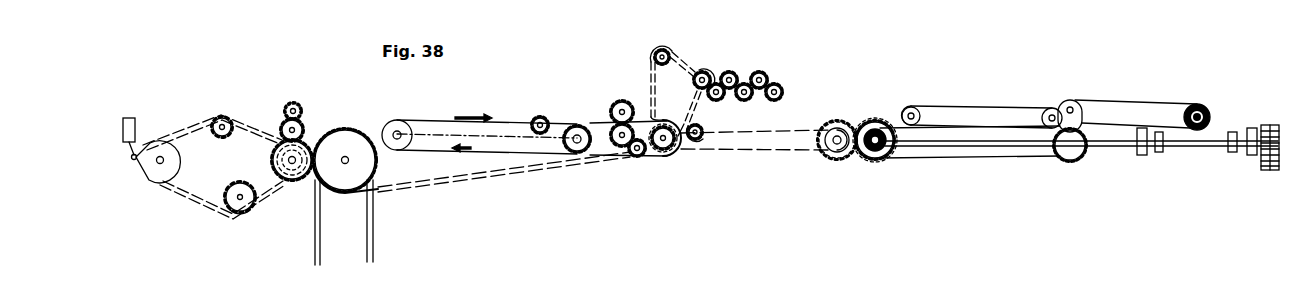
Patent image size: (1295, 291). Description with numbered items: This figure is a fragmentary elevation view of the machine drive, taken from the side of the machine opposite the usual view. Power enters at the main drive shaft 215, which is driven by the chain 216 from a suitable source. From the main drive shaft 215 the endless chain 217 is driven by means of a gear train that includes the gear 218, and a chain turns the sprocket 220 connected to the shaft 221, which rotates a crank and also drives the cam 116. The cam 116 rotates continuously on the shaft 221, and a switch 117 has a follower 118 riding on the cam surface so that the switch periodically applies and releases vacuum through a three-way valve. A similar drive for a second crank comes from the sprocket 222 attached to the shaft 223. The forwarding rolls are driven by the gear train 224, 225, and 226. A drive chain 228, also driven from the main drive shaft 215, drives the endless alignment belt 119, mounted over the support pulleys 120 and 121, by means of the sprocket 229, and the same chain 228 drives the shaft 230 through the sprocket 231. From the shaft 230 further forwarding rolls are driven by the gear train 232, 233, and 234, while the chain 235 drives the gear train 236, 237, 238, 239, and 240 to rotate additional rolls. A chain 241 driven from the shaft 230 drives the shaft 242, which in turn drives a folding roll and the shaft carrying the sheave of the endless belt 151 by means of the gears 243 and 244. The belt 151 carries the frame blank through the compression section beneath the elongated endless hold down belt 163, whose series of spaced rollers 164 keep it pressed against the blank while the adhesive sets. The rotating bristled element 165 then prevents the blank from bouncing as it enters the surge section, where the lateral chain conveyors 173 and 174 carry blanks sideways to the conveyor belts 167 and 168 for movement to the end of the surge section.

The cam 116 is at (157, 178).
The switch 117 is at (128, 118).
The follower 118 is at (132, 160).
The endless belt 119 is at (420, 118).
The support pulley 120 is at (577, 124).
The support pulley 121 is at (393, 144).
The endless belt 151 is at (978, 158).
The elongated endless belt 163 is at (958, 106).
The spaced rollers 164 is at (912, 106).
The rotating bristled element 165 is at (1205, 110).
The conveyor belt 167 is at (1232, 153).
The conveyor belt 168 is at (1158, 153).
The lateral chain conveyor 173 is at (1259, 157).
The lateral chain conveyor 174 is at (1140, 156).
The main drive shaft 215 is at (347, 156).
The chain 216 is at (373, 238).
The endless chain 217 is at (271, 203).
The gear train 218 is at (322, 190).
The sprocket 220 is at (151, 142).
The shaft 221 is at (165, 159).
The sprocket 222 is at (233, 213).
The shaft 223 is at (240, 201).
The gear train 224 is at (307, 140).
The gear train 225 is at (283, 127).
The gear train 226 is at (289, 101).
The drive chain 228 is at (494, 176).
The sprocket 229 is at (580, 136).
The shaft 230 is at (677, 153).
The sprocket 231 is at (660, 152).
The gear train 232 is at (635, 158).
The gear train 233 is at (617, 147).
The gear train 234 is at (622, 98).
The chain 235 is at (688, 63).
The gear train 236 is at (704, 70).
The gear train 237 is at (732, 70).
The gear train 238 is at (750, 100).
The gear train 239 is at (761, 70).
The gear train 240 is at (784, 88).
The chain 241 is at (780, 152).
The shaft 242 is at (832, 134).
The gear 243 is at (853, 127).
The gear 244 is at (858, 123).